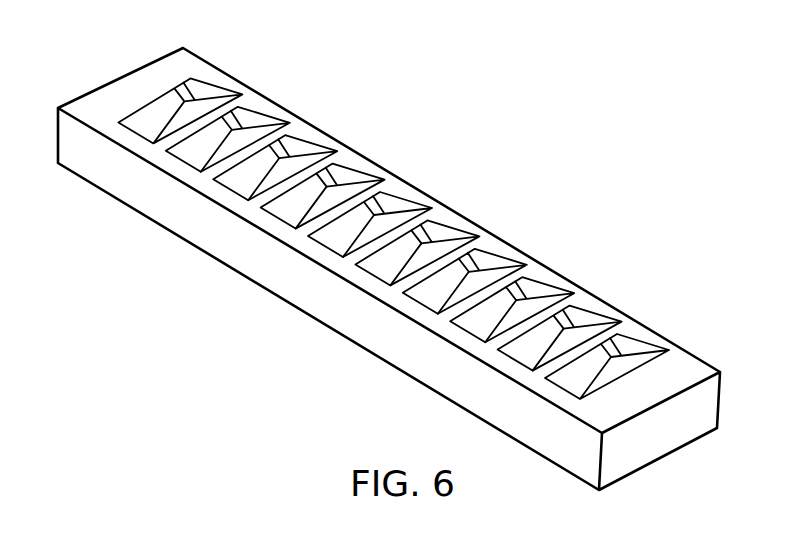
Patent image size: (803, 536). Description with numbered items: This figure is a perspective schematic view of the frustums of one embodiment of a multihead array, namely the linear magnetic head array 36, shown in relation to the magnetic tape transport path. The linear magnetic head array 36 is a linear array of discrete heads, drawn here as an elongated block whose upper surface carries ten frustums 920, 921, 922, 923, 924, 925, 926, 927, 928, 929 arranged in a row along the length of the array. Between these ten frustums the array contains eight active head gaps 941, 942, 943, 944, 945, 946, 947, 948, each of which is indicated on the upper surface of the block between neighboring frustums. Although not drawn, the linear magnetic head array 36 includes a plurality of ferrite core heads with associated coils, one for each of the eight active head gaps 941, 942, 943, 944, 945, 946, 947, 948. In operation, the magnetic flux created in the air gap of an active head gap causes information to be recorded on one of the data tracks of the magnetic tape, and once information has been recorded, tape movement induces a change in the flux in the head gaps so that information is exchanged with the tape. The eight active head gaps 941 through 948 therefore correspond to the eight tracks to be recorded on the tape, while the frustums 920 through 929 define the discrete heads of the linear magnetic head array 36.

The linear magnetic head array 36 is at (556, 157).
The frustum 920 is at (643, 342).
The frustum 921 is at (596, 314).
The frustum 922 is at (550, 287).
The frustum 923 is at (505, 257).
The frustum 924 is at (465, 230).
The frustum 925 is at (418, 201).
The frustum 926 is at (360, 172).
The frustum 927 is at (311, 143).
The frustum 928 is at (264, 115).
The frustum 929 is at (216, 86).
The active head gap 941 is at (564, 329).
The active head gap 942 is at (516, 300).
The active head gap 943 is at (469, 272).
The active head gap 944 is at (421, 243).
The active head gap 945 is at (374, 215).
The active head gap 946 is at (327, 187).
The active head gap 947 is at (279, 158).
The active head gap 948 is at (232, 130).